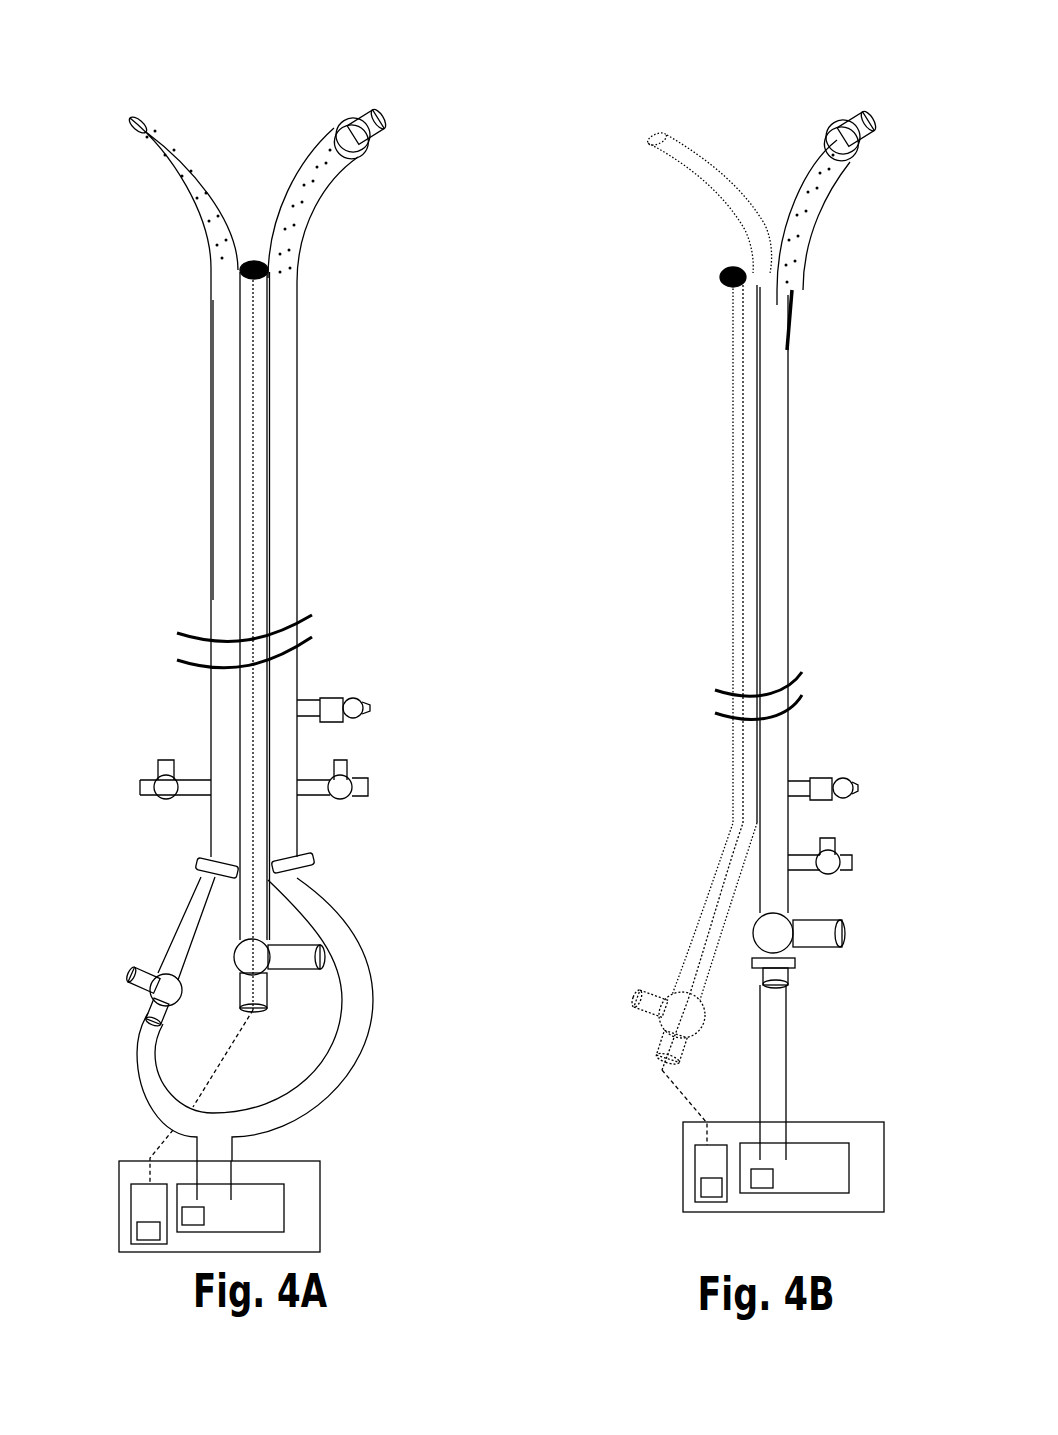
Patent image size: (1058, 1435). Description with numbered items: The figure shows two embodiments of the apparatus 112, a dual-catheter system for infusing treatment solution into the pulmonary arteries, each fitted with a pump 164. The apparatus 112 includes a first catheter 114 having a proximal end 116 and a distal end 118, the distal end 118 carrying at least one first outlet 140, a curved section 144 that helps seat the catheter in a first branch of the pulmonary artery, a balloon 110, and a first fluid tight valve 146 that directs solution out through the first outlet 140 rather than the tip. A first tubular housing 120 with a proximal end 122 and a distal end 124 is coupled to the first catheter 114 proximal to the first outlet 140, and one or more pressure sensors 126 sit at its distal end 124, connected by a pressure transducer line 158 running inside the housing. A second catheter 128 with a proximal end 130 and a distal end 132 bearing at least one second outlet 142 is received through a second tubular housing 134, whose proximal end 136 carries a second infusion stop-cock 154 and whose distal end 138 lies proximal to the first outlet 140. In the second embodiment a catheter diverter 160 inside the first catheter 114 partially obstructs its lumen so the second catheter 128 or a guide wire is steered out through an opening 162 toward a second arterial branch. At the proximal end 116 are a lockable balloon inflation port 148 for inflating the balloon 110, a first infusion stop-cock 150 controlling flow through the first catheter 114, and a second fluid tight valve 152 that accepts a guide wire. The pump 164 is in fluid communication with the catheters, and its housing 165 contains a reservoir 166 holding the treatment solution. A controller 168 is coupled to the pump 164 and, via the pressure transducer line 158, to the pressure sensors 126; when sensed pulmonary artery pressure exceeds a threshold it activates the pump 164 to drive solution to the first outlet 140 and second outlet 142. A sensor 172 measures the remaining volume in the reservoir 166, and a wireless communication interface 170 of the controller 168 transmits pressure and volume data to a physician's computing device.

In FIG. 4A, the balloon 110 is at (362, 160).
In FIG. 4B, the balloon 110 is at (863, 160).
In FIG. 4A, the apparatus 112 is at (248, 61).
In FIG. 4B, the apparatus 112 is at (538, 179).
In FIG. 4A, the first catheter 114 is at (292, 478).
In FIG. 4B, the first catheter 114 is at (787, 490).
In FIG. 4A, the proximal end of the first catheter 116 is at (324, 826).
In FIG. 4B, the proximal end of the first catheter 116 is at (864, 938).
In FIG. 4A, the distal end of the first catheter 118 is at (331, 108).
In FIG. 4B, the distal end of the first catheter 118 is at (843, 120).
In FIG. 4A, the first tubular housing 120 is at (262, 363).
In FIG. 4B, the first tubular housing 120 is at (732, 605).
In FIG. 4A, the proximal end of the first tubular housing 122 is at (232, 978).
In FIG. 4B, the proximal end of the first tubular housing 122 is at (603, 999).
In FIG. 4A, the distal end of the first tubular housing 124 is at (243, 256).
In FIG. 4B, the distal end of the first tubular housing 124 is at (716, 277).
In FIG. 4A, the pressure sensor 126 is at (254, 260).
In FIG. 4B, the pressure sensor 126 is at (736, 268).
In FIG. 4A, the second catheter 128 is at (168, 948).
In FIG. 4B, the second catheter 128 is at (757, 232).
In FIG. 4A, the proximal end of the second catheter 130 is at (126, 1000).
In FIG. 4A, the distal end of the second catheter 132 is at (113, 115).
In FIG. 4B, the distal end of the second catheter 132 is at (638, 141).
In FIG. 4A, the second tubular housing 134 is at (207, 390).
In FIG. 4A, the proximal end of the second tubular housing 136 is at (188, 817).
In FIG. 4A, the distal end of the second tubular housing 138 is at (203, 266).
In FIG. 4A, the first outlet 140 is at (303, 150).
In FIG. 4B, the first outlet 140 is at (810, 165).
In FIG. 4A, the second outlet 142 is at (165, 118).
In FIG. 4B, the second outlet 142 is at (660, 140).
In FIG. 4A, the curved section 144 is at (325, 220).
In FIG. 4B, the curved section 144 is at (840, 199).
In FIG. 4A, the first fluid tight valve 146 is at (375, 115).
In FIG. 4B, the first fluid tight valve 146 is at (876, 125).
In FIG. 4A, the lockable balloon inflation port 148 is at (370, 713).
In FIG. 4B, the lockable balloon inflation port 148 is at (858, 788).
In FIG. 4A, the first infusion stop-cock 150 is at (362, 785).
In FIG. 4B, the first infusion stop-cock 150 is at (852, 860).
In FIG. 4A, the second fluid tight valve 152 is at (287, 887).
In FIG. 4B, the second fluid tight valve 152 is at (777, 987).
In FIG. 4A, the second infusion stop-cock 154 is at (137, 785).
In FIG. 4A, the pressure transducer line 158 is at (253, 300).
In FIG. 4B, the pressure transducer line 158 is at (742, 485).
In FIG. 4B, the catheter diverter 160 is at (793, 292).
In FIG. 4B, the opening 162 is at (750, 270).
In FIG. 4A, the pump 164 is at (308, 1180).
In FIG. 4B, the pump 164 is at (880, 1143).
In FIG. 4A, the housing 165 is at (310, 1160).
In FIG. 4B, the housing 165 is at (858, 1122).
In FIG. 4A, the reservoir 166 is at (285, 1197).
In FIG. 4B, the reservoir 166 is at (850, 1157).
In FIG. 4A, the controller 168 is at (132, 1193).
In FIG. 4B, the controller 168 is at (695, 1150).
In FIG. 4A, the wireless communication interface 170 is at (138, 1236).
In FIG. 4B, the wireless communication interface 170 is at (700, 1193).
In FIG. 4A, the sensor 172 is at (190, 1225).
In FIG. 4B, the sensor 172 is at (756, 1190).